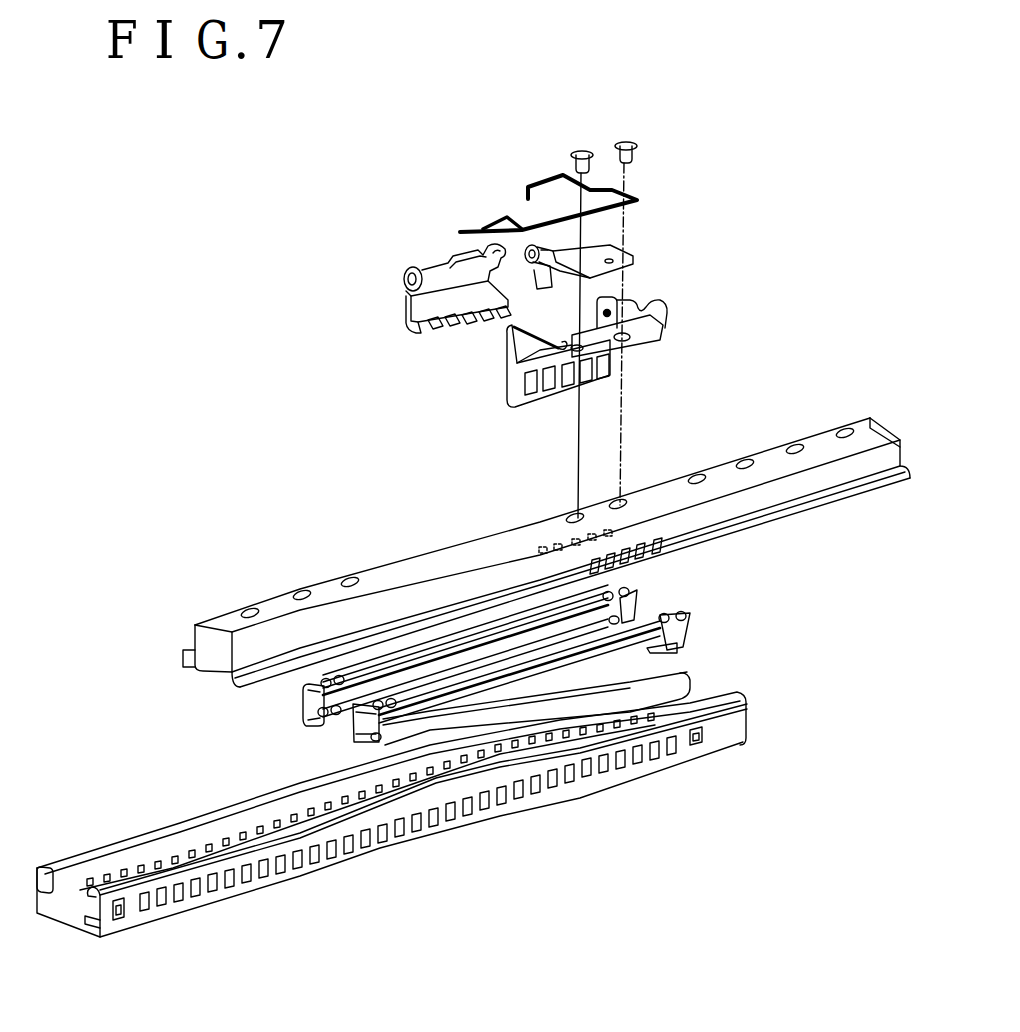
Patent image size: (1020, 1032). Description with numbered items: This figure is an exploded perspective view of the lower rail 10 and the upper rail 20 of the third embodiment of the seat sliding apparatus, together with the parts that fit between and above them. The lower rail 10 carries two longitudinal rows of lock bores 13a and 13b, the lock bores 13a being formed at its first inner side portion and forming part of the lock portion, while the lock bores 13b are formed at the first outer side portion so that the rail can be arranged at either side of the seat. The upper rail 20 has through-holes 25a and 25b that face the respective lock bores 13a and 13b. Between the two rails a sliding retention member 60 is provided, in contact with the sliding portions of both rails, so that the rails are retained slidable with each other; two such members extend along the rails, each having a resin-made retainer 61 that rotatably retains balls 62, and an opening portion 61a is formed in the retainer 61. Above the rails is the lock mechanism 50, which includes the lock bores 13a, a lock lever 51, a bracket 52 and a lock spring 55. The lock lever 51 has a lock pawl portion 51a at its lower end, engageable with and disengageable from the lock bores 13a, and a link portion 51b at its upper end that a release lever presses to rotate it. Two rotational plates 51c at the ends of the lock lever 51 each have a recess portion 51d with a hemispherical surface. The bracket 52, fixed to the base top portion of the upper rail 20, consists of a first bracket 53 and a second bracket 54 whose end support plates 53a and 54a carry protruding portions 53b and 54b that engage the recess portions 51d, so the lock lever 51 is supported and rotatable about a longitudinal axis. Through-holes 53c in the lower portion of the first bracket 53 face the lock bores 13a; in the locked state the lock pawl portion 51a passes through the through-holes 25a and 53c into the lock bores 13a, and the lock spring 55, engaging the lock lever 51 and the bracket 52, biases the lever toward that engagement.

The lower rail 10 is at (110, 832).
The lock bores 13a is at (260, 826).
The lock bores 13b is at (292, 866).
The upper rail 20 is at (298, 574).
The through-holes 25a is at (540, 547).
The through-holes 25b is at (676, 547).
The lock mechanism 50 is at (757, 175).
The lock lever 51 is at (392, 231).
The lock pawl portion 51a is at (426, 336).
The link portion 51b is at (455, 256).
The rotational plates 51c is at (404, 297).
The recess portion 51d is at (403, 276).
The bracket 52 is at (726, 337).
The first bracket 53 is at (640, 346).
The support plate 53a is at (661, 316).
The protruding portion 53b is at (618, 300).
The through-holes 53c is at (530, 393).
The second bracket 54 is at (625, 255).
The support plate 54a is at (543, 268).
The protruding portion 54b is at (541, 250).
The lock spring 55 is at (527, 190).
The sliding retention member 60 is at (758, 613).
The retainer 61 is at (696, 630).
The opening portion 61a is at (663, 661).
The balls 62 is at (668, 604).